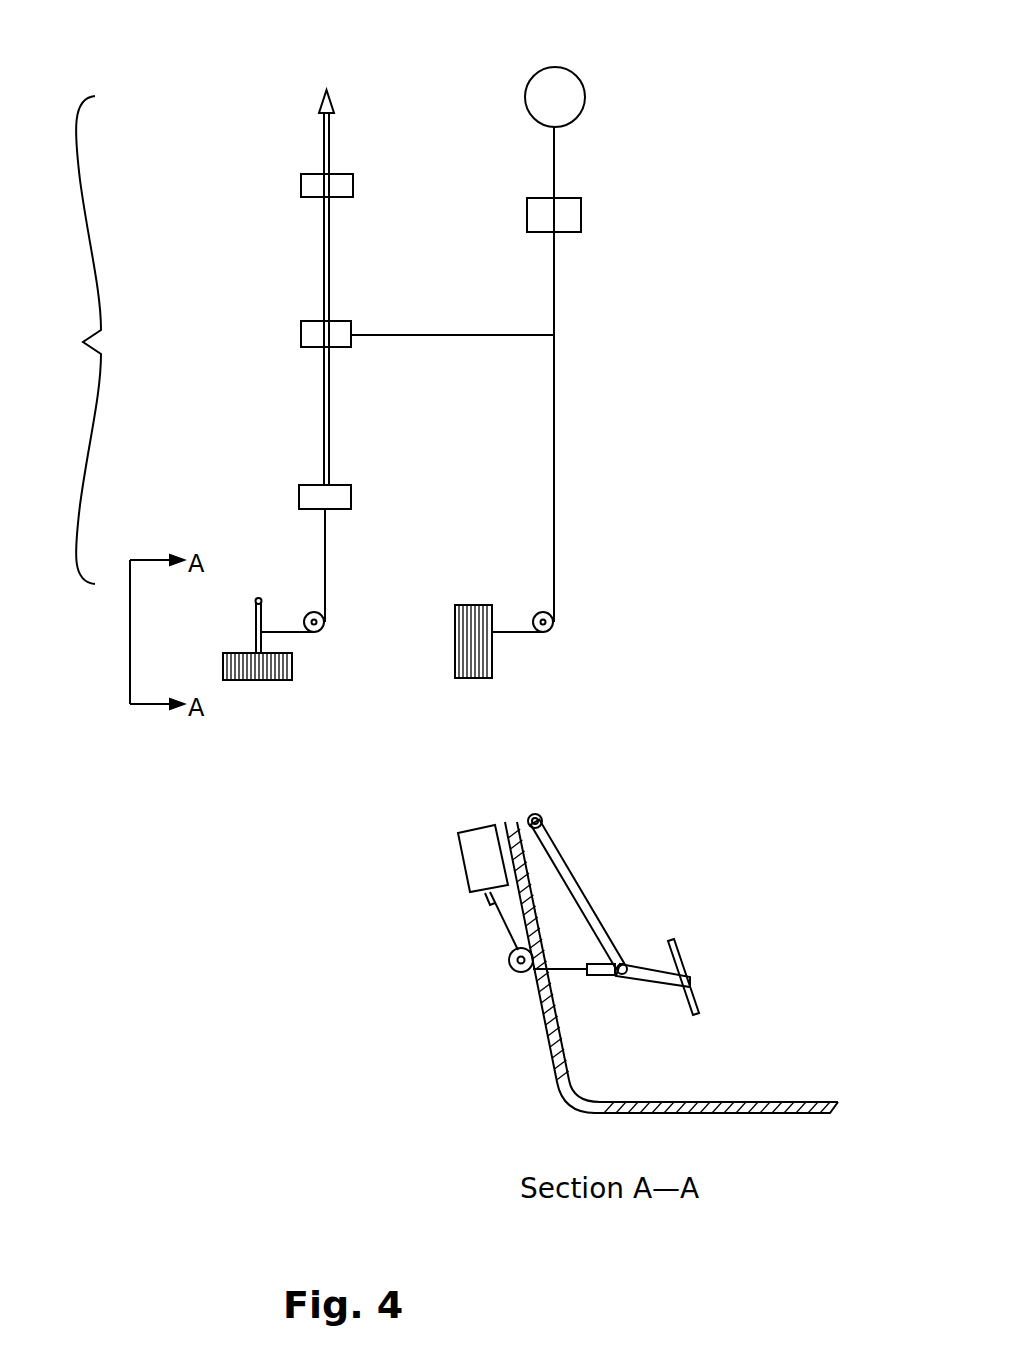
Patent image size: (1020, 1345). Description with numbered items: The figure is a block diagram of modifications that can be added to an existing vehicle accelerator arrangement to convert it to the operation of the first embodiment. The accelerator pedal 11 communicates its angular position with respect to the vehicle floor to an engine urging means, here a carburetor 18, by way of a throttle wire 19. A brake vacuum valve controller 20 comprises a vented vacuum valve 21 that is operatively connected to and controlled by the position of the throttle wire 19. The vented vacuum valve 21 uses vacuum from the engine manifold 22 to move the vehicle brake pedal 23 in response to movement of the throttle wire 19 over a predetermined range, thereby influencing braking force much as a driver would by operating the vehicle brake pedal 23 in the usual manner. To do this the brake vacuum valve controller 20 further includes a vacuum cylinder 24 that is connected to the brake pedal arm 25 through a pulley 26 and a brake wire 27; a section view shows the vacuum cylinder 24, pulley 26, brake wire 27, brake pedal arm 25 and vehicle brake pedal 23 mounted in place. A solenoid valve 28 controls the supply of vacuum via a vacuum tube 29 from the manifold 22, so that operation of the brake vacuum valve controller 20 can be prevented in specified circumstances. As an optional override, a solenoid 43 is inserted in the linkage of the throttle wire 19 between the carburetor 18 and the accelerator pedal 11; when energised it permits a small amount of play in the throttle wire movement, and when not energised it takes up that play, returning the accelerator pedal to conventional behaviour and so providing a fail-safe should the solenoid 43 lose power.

The accelerator pedal 11 is at (462, 672).
The carburetor 18 is at (572, 90).
The throttle wire 19 is at (556, 482).
The brake vacuum valve controller 20 is at (68, 340).
The vented vacuum valve 21 is at (312, 337).
The engine manifold 22 is at (311, 69).
The vehicle brake pedal 23 is at (283, 680).
The vacuum cylinder 24 is at (312, 497).
The brake pedal arm 25 is at (255, 635).
The pulley 26 is at (322, 626).
The brake wire 27 is at (327, 556).
The solenoid valve 28 is at (312, 185).
The vacuum tube 29 is at (322, 268).
The solenoid 43 is at (568, 212).